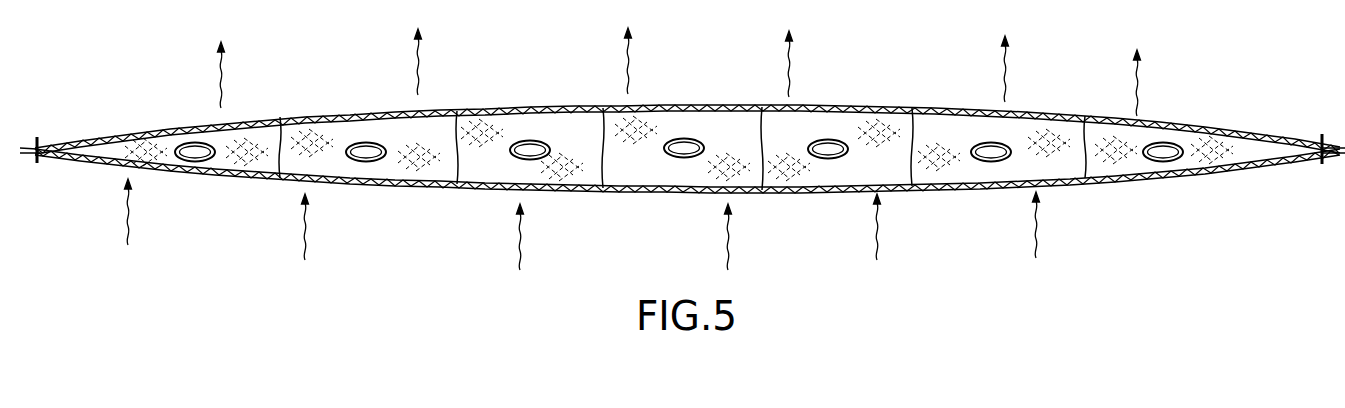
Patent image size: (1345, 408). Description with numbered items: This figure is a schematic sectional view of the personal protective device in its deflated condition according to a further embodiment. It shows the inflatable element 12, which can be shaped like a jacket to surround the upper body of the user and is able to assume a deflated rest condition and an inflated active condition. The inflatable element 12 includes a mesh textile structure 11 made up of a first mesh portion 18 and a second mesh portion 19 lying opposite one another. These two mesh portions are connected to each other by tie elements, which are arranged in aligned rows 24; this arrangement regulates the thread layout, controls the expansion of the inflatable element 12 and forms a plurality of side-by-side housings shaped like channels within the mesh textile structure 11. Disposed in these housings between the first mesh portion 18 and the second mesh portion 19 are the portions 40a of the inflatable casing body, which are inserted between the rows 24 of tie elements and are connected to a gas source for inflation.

The mesh textile structure 11 is at (1027, 115).
The inflatable element 12 is at (347, 93).
The first mesh portion 18 is at (568, 108).
The second mesh portion 19 is at (616, 190).
The rows of tie elements 24 is at (915, 107).
The portions of the inflatable casing body 40a is at (682, 139).